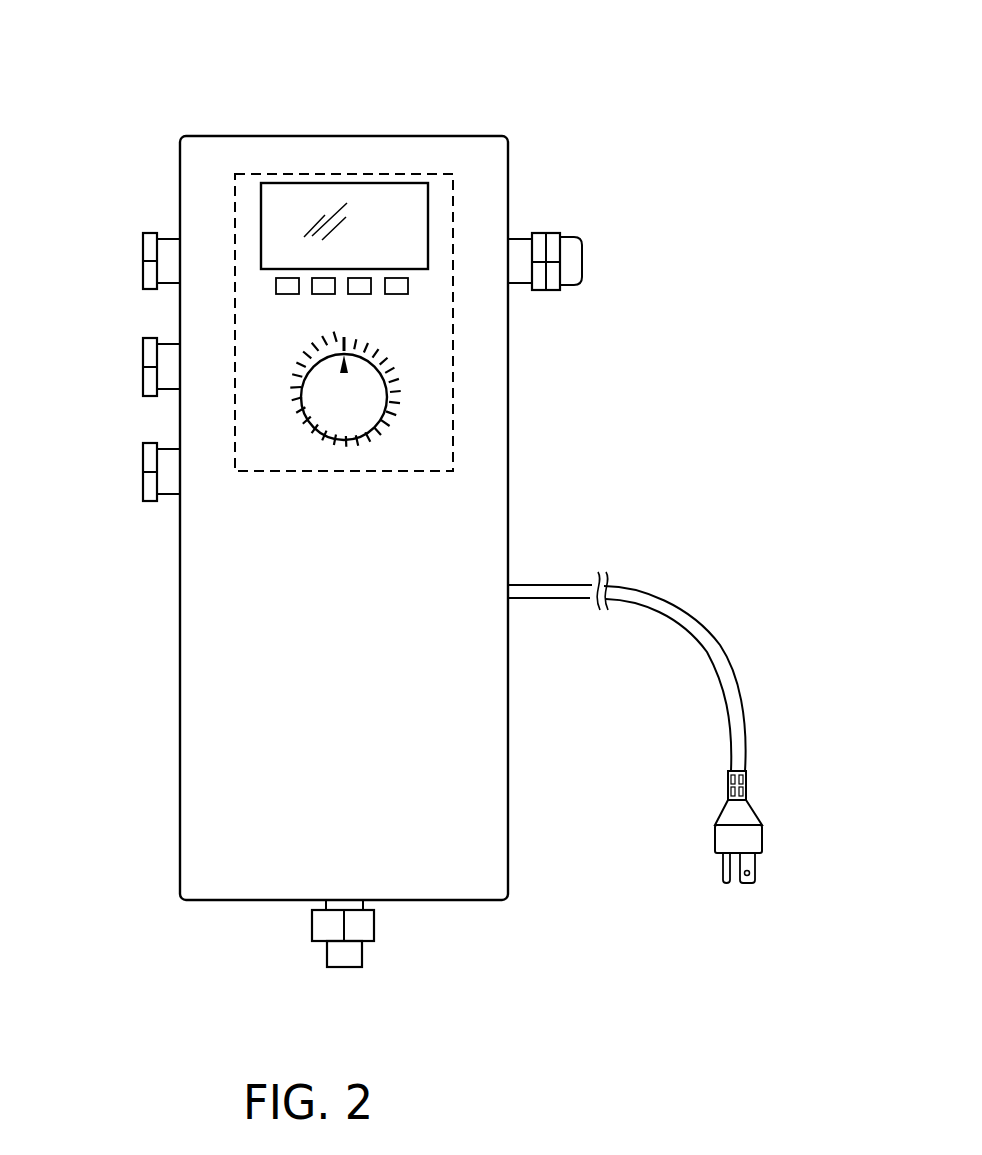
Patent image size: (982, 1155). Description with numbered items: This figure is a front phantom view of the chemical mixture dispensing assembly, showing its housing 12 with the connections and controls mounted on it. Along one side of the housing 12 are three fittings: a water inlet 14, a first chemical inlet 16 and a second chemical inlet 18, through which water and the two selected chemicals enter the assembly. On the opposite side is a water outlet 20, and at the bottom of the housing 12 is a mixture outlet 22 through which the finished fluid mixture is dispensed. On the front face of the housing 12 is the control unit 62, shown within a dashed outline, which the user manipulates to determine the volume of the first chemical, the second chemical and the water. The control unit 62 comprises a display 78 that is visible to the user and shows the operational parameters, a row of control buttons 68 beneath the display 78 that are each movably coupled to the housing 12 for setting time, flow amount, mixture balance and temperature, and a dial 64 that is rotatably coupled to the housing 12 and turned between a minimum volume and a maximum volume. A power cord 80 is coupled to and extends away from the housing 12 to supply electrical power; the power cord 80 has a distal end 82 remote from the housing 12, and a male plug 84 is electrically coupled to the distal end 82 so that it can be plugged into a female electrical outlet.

The housing 12 is at (476, 136).
The water inlet 14 is at (150, 236).
The first chemical inlet 16 is at (148, 338).
The second chemical inlet 18 is at (148, 445).
The water outlet 20 is at (570, 238).
The mixture outlet 22 is at (360, 953).
The control unit 62 is at (233, 180).
The dial 64 is at (392, 396).
The control buttons 68 is at (320, 265).
The display 78 is at (388, 183).
The power cord 80 is at (680, 600).
The distal end 82 is at (747, 789).
The male plug 84 is at (758, 842).